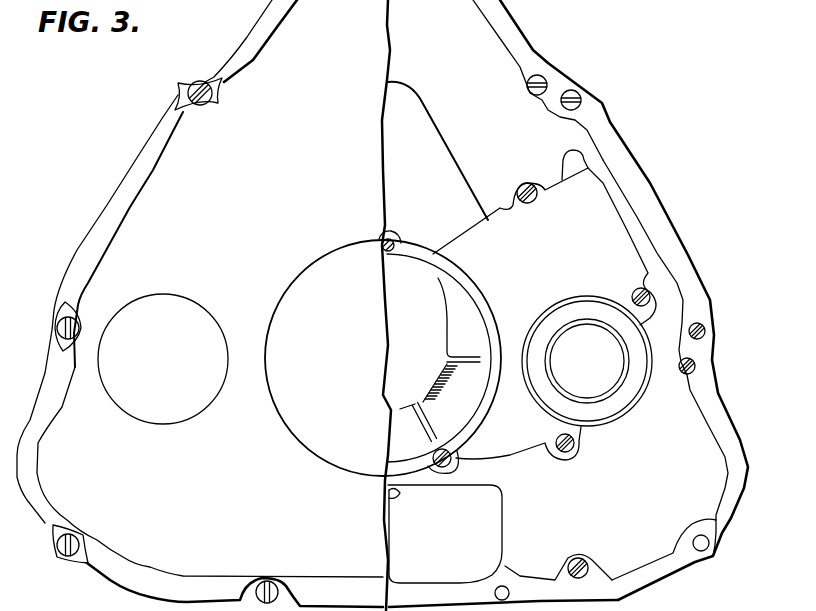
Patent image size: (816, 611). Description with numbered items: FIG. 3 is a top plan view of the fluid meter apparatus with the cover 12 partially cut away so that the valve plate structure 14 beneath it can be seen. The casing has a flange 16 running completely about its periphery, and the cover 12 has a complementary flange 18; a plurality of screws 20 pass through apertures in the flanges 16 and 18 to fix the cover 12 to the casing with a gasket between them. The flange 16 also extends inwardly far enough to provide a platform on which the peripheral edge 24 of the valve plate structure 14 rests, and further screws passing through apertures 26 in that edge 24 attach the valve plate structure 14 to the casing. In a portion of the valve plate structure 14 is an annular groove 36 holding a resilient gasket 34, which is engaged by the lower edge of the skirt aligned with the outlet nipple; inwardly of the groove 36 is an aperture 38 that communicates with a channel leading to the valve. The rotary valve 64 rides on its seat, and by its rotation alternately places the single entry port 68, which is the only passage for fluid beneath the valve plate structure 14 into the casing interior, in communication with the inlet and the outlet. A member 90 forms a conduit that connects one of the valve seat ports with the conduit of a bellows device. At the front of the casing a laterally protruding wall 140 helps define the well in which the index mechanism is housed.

The cover 12 is at (203, 152).
The valve plate structure 14 is at (413, 65).
The flange 16 is at (724, 509).
The flange 18 is at (100, 219).
The screws 20 is at (184, 84).
The peripheral edge 24 is at (502, 60).
The apertures 26 is at (548, 82).
The resilient gasket 34 is at (625, 393).
The annular groove 36 is at (576, 302).
The aperture 38 is at (560, 388).
The valve 64 is at (410, 282).
The entry port 68 is at (415, 433).
The member 90 is at (492, 204).
The wall 140 is at (480, 520).